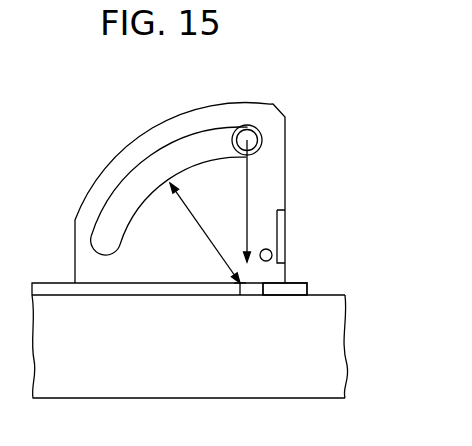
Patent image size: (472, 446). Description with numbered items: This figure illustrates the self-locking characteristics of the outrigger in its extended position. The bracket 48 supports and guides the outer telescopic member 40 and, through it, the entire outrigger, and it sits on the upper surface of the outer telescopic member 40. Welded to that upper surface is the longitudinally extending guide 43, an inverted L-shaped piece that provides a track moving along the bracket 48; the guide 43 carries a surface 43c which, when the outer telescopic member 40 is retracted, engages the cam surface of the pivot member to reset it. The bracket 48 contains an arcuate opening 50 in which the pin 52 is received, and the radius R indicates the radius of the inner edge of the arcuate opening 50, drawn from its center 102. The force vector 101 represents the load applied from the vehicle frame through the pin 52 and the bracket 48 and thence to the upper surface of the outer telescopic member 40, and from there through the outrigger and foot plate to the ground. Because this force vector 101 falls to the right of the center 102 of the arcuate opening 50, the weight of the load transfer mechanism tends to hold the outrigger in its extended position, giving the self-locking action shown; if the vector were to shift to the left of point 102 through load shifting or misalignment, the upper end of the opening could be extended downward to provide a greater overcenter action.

The bracket 48 is at (160, 122).
The arcuate opening 50 is at (142, 165).
The pin 52 is at (247, 125).
The force vector 101 is at (250, 228).
The radius of the inner edge R is at (200, 230).
The center of arcuate opening 102 is at (236, 290).
The guide 43 is at (142, 290).
The surface on guide 43 43c is at (262, 296).
The outer telescopic member 40 is at (320, 344).